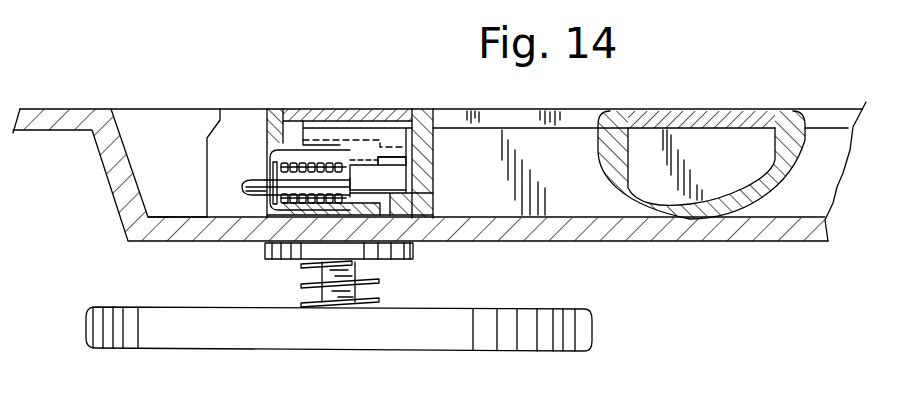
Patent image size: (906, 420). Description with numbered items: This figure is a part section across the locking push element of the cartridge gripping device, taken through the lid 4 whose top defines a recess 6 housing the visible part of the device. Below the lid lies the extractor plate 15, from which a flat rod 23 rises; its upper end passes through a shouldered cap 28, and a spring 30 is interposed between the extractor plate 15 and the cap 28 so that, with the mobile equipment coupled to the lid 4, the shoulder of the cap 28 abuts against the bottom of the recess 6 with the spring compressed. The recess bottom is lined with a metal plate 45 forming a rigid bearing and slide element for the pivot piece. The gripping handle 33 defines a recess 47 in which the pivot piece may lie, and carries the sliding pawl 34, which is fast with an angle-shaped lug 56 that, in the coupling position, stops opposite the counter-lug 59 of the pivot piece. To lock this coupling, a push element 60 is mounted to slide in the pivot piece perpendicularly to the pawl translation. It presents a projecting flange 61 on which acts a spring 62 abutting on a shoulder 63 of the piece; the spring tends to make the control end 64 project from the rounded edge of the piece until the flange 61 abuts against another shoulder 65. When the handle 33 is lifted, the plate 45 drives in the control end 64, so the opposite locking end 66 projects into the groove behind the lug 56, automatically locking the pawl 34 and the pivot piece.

The lid 4 is at (61, 104).
The recess 6 is at (152, 122).
The extractor plate 15 is at (182, 338).
The flat rod 23 is at (323, 300).
The shouldered cap 28 is at (413, 253).
The spring 30 is at (380, 280).
The gripping handle 33 is at (679, 106).
The sliding pawl 34 is at (348, 109).
The metal plate 45 is at (247, 243).
The recess 47 is at (312, 145).
The angle-shaped lug 56 is at (397, 177).
The counter-lug 59 is at (367, 162).
The push element 60 is at (290, 162).
The projecting flange 61 is at (276, 181).
The spring 62 is at (295, 179).
The shoulder 63 is at (351, 167).
The control end 64 is at (245, 182).
The shoulder 65 is at (265, 200).
The locking end 66 is at (400, 192).